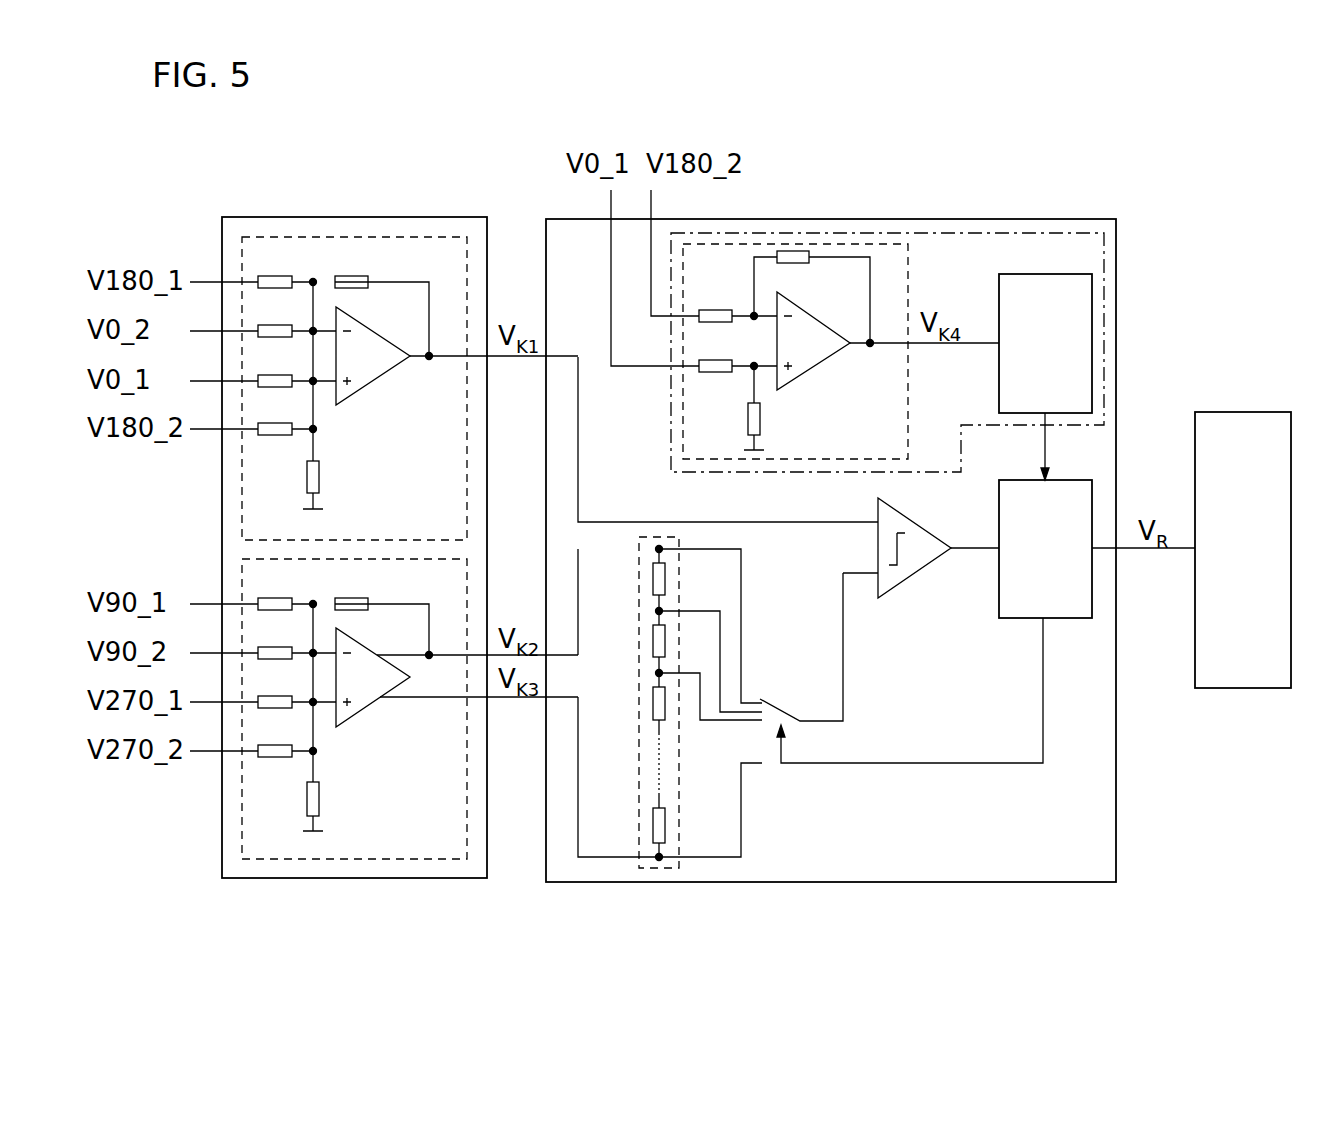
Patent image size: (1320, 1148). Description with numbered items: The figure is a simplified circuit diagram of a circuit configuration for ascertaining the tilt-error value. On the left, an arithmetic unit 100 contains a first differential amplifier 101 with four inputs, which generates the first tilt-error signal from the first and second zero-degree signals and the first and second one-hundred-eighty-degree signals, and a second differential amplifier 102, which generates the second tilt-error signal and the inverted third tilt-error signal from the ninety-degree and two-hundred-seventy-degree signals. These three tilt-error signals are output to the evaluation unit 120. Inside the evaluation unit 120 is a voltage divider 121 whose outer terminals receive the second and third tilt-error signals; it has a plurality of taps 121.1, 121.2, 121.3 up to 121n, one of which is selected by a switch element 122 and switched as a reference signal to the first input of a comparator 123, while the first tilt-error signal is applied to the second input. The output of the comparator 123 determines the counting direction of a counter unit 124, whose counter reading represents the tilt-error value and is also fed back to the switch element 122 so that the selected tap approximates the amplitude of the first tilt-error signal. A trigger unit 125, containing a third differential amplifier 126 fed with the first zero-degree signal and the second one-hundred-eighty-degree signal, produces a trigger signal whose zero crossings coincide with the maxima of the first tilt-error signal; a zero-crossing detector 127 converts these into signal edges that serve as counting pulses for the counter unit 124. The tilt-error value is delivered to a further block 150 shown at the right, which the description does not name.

The arithmetic unit 100 is at (344, 217).
The first differential amplifier 101 is at (428, 237).
The second differential amplifier 102 is at (240, 834).
The evaluation unit 120 is at (812, 219).
The voltage divider 121 is at (639, 683).
The tap 121.1 is at (741, 570).
The tap 121.2 is at (720, 627).
The tap 121.3 is at (700, 700).
The tap 121n is at (741, 808).
The switch element 122 is at (795, 718).
The comparator 123 is at (913, 575).
The counter unit 124 is at (1005, 618).
The trigger unit 125 is at (1105, 248).
The third differential amplifier 126 is at (908, 280).
The zero-crossing detector 127 is at (1092, 315).
The output unit 150 is at (1243, 412).